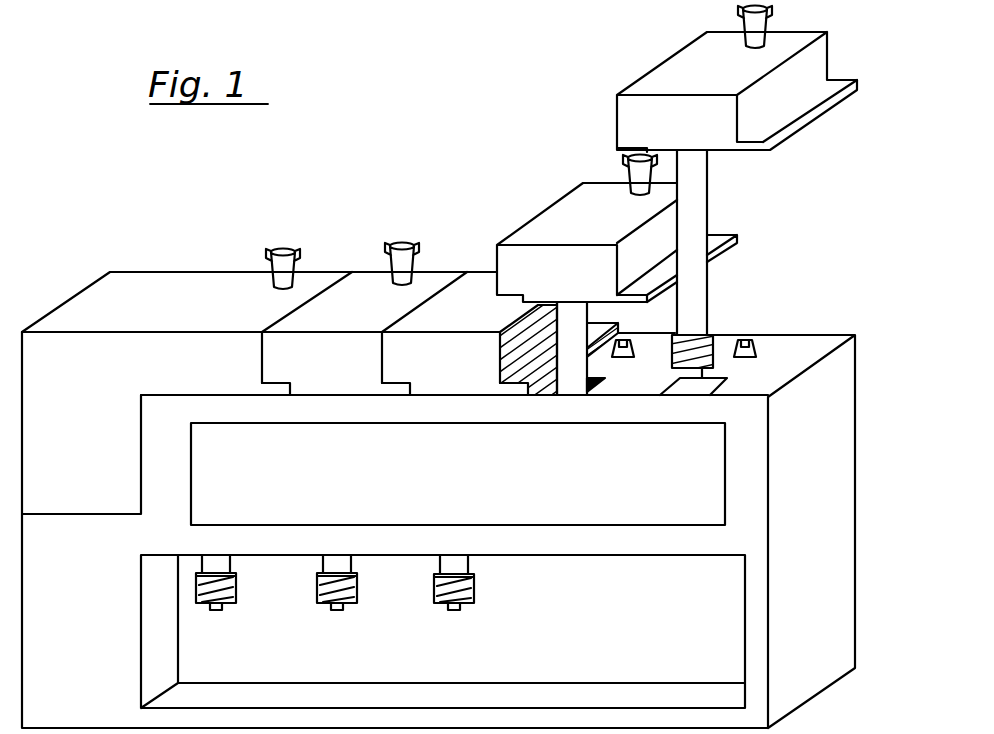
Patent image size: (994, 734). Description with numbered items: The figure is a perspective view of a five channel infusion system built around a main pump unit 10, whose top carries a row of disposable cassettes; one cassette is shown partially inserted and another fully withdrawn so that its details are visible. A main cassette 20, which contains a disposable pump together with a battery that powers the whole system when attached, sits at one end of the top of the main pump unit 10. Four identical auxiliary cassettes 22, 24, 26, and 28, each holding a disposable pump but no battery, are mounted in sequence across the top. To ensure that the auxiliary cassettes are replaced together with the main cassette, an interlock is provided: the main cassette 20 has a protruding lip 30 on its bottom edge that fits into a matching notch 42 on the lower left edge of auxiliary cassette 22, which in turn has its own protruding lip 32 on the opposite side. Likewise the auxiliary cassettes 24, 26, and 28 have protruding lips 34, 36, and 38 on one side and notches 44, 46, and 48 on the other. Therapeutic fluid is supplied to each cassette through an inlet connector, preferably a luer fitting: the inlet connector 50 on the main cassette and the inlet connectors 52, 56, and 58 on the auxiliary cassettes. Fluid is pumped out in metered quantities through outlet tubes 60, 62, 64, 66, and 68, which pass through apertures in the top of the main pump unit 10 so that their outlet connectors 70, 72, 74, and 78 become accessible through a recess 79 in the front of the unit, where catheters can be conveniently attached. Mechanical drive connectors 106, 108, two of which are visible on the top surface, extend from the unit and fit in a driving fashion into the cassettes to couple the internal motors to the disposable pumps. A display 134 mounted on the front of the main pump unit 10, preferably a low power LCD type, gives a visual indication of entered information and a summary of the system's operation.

The main pump unit 10 is at (808, 602).
The main cassette 20 is at (78, 306).
The auxiliary cassette 22 is at (362, 278).
The auxiliary cassette 24 is at (441, 300).
The auxiliary cassette 26 is at (578, 190).
The auxiliary cassette 28 is at (656, 73).
The protruding lip 30 is at (270, 392).
The protruding lip 32 is at (387, 397).
The protruding lip 34 is at (500, 397).
The protruding lip 36 is at (738, 238).
The protruding lip 38 is at (820, 95).
The notch 42 is at (289, 376).
The notch 44 is at (409, 377).
The notch 46 is at (512, 304).
The notch 48 is at (617, 150).
The inlet connector 50 is at (280, 250).
The inlet connector 52 is at (402, 243).
The inlet connector 56 is at (625, 167).
The inlet connector 58 is at (740, 18).
The outlet tube 60 is at (232, 565).
The outlet tube 62 is at (352, 565).
The outlet tube 64 is at (470, 565).
The outlet tube 66 is at (563, 336).
The outlet tube 68 is at (695, 197).
The outlet connector 70 is at (200, 607).
The outlet connector 72 is at (318, 607).
The outlet connector 74 is at (436, 606).
The outlet connector 78 is at (712, 332).
The recess 79 is at (527, 697).
The mechanical drive connector 106 is at (630, 337).
The mechanical drive connector 108 is at (752, 342).
The display 134 is at (447, 489).